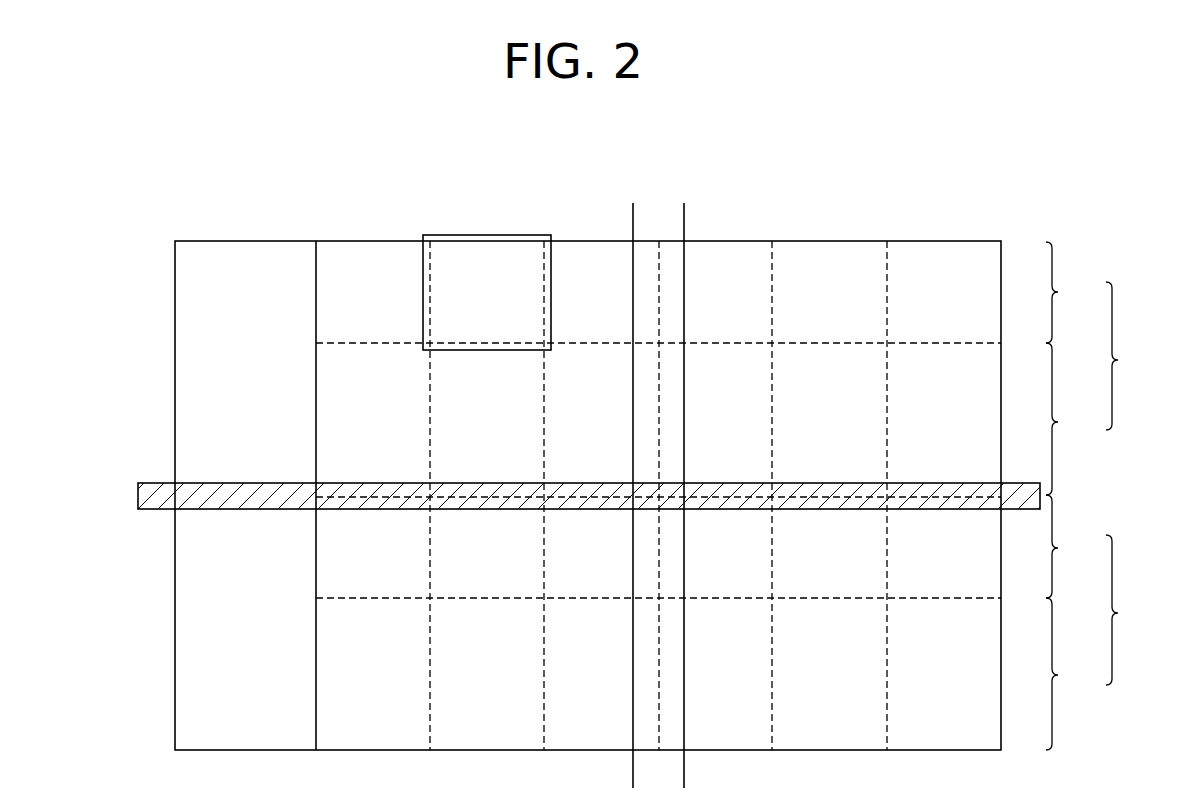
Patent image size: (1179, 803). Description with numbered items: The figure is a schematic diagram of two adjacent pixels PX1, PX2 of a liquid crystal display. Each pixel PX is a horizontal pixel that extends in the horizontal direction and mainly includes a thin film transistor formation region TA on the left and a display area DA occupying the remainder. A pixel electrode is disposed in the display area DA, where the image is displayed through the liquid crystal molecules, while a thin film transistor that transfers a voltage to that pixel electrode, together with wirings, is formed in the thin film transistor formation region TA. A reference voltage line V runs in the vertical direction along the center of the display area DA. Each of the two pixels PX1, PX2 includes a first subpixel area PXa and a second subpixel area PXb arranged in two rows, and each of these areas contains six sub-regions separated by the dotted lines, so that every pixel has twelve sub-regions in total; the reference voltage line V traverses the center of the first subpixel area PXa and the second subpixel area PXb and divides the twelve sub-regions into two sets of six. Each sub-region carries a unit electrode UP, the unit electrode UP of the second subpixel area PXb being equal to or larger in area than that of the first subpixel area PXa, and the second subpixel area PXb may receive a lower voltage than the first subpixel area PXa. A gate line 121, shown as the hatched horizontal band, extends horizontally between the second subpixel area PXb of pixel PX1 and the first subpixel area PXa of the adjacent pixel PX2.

The pixel PX is at (952, 194).
The thin film transistor formation region TA is at (245, 240).
The display area DA is at (826, 240).
The unit electrode UP is at (488, 235).
The reference voltage line V is at (684, 222).
The gate line 121 is at (150, 490).
The first subpixel area PXa is at (1075, 420).
The second subpixel area PXb is at (1075, 546).
The first pixel PX1 is at (1135, 356).
The second pixel PX2 is at (1135, 610).